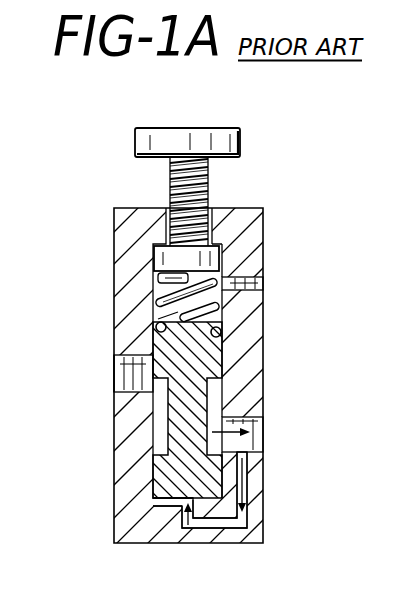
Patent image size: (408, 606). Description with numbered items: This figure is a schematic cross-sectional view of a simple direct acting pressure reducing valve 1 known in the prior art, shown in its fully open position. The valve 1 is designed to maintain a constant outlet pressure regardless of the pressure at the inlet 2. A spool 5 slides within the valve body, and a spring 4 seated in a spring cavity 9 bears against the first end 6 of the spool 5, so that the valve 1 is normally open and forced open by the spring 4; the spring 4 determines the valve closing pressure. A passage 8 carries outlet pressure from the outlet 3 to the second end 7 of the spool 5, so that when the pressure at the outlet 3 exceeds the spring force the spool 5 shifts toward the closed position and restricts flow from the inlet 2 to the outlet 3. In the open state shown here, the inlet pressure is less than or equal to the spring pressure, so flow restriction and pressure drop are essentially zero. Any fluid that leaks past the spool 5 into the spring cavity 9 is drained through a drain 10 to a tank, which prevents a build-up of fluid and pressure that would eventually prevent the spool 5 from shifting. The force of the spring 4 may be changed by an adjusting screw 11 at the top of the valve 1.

The direct acting pressure reducing valve 1 is at (97, 151).
The inlet 2 is at (118, 372).
The outlet 3 is at (250, 440).
The spring 4 is at (163, 326).
The spool 5 is at (178, 437).
The first end 6 is at (222, 322).
The second end 7 is at (172, 513).
The passage 8 is at (249, 489).
The spring cavity 9 is at (152, 278).
The drain 10 is at (258, 283).
The adjusting screw 11 is at (239, 141).